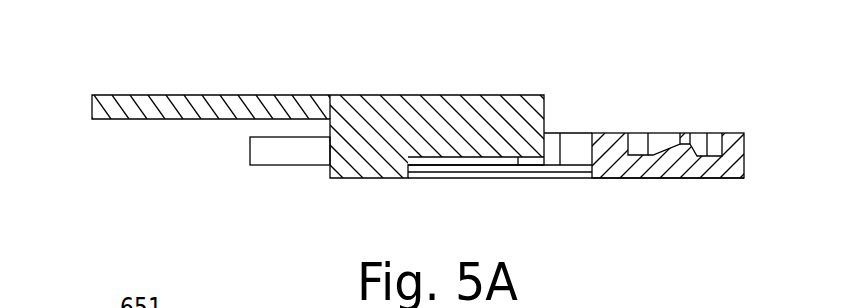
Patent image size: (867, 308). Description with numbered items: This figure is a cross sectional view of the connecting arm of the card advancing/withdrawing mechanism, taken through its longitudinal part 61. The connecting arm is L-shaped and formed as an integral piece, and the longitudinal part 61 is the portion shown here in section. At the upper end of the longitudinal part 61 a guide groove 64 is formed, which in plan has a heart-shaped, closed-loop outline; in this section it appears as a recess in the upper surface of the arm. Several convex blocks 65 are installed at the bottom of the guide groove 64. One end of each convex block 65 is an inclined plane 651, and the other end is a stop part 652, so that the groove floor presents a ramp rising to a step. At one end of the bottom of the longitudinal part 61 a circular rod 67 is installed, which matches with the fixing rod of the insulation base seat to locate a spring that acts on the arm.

The longitudinal part 61 is at (403, 110).
The guide groove 64 is at (637, 137).
The convex block 65 is at (682, 132).
The inclined plane 651 is at (665, 152).
The stop part 652 is at (688, 148).
The circular rod 67 is at (263, 158).